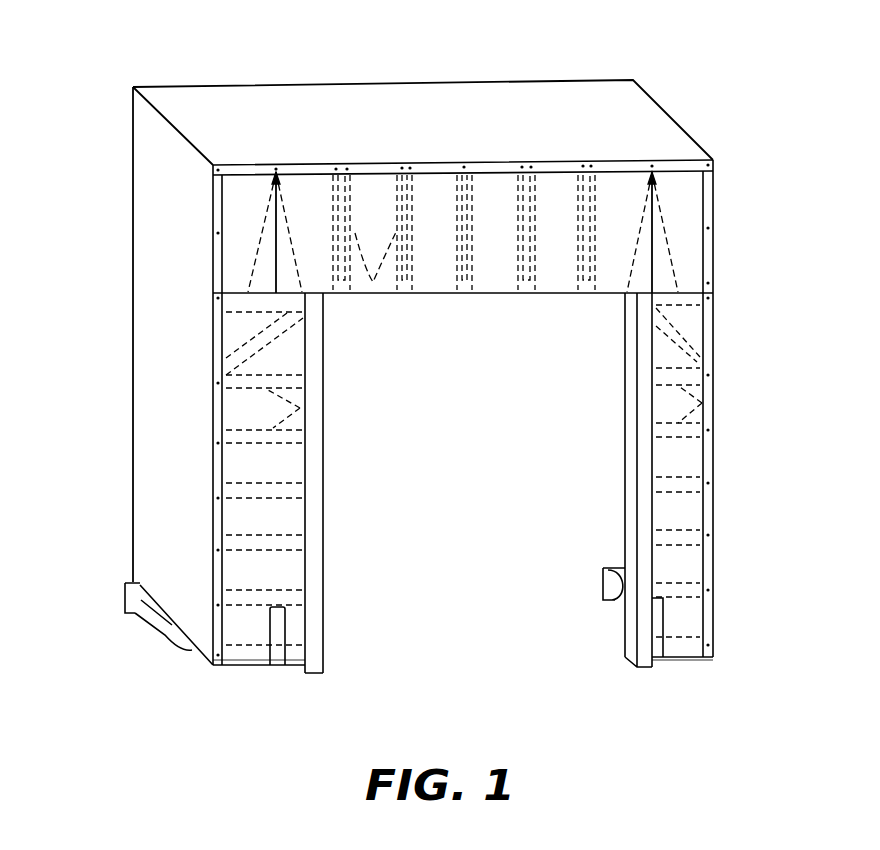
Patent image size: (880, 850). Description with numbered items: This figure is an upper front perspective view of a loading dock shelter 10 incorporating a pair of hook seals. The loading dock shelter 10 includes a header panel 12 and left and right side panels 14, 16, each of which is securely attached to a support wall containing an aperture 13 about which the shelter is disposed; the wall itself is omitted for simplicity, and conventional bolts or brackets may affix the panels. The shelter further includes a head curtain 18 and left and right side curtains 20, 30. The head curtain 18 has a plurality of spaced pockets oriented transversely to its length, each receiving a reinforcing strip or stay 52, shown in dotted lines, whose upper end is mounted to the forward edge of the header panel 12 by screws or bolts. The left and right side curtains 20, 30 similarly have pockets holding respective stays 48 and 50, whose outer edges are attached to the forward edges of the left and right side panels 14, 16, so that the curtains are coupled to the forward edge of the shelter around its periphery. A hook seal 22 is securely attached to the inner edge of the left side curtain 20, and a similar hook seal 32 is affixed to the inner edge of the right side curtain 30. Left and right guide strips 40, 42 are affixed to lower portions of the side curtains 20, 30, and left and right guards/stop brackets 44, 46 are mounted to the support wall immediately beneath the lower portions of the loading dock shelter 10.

The loading dock shelter 10 is at (243, 73).
The header panel 12 is at (398, 100).
The aperture 13 is at (460, 428).
The left side panel 14 is at (152, 330).
The right side panel 16 is at (715, 262).
The head curtain 18 is at (495, 291).
The left side curtain 20 is at (235, 667).
The hook seal 22 is at (315, 559).
The right side curtain 30 is at (688, 658).
The hook seal 32 is at (630, 398).
The left guide strip 40 is at (277, 655).
The right guide strip 42 is at (658, 652).
The left guard/stop bracket 44 is at (153, 620).
The right guard/stop bracket 46 is at (620, 598).
The left stay 48 is at (300, 408).
The right stay 50 is at (702, 403).
The reinforcing strip or stay 52 is at (373, 283).